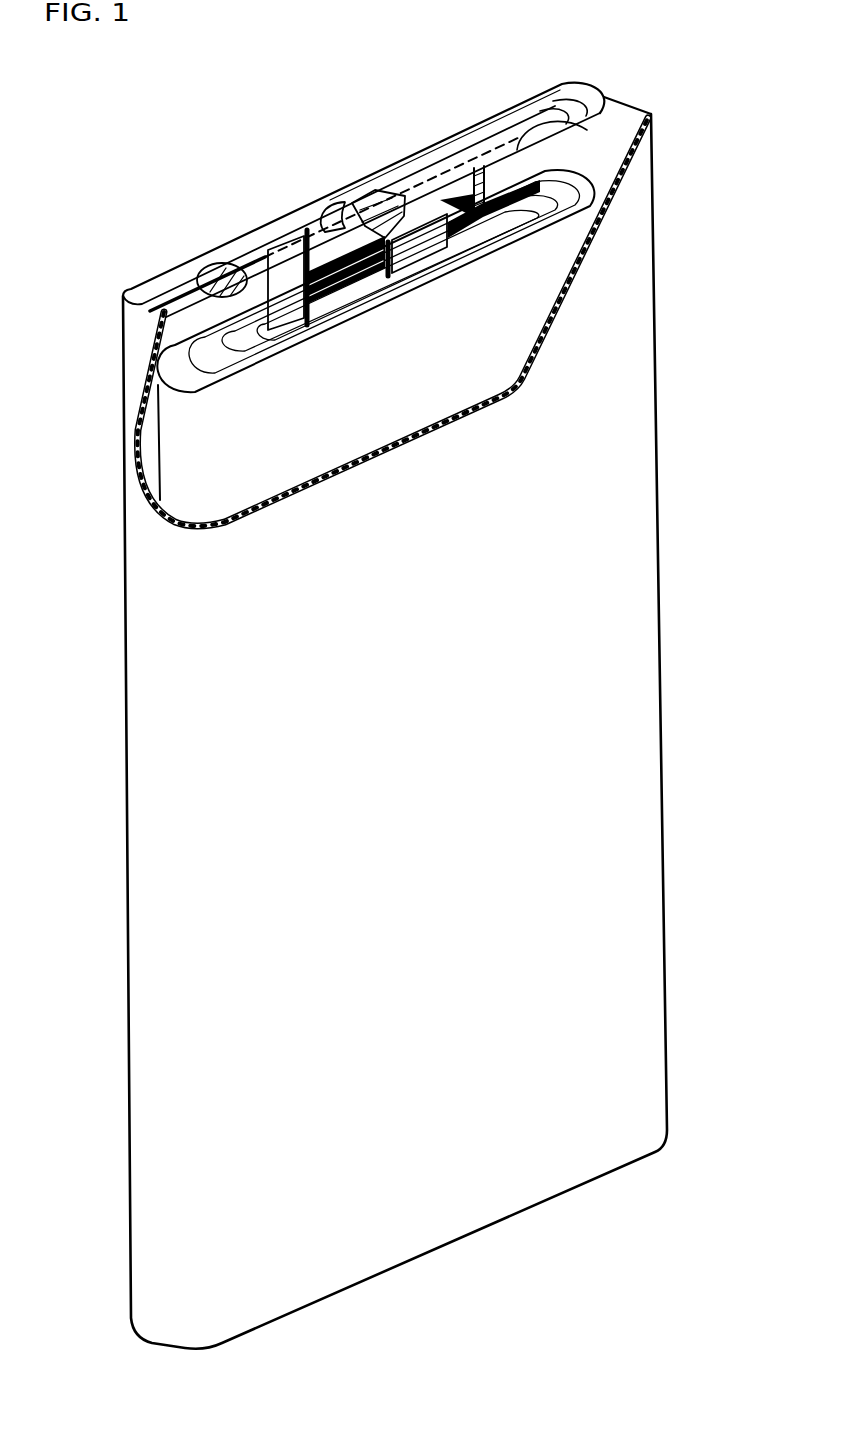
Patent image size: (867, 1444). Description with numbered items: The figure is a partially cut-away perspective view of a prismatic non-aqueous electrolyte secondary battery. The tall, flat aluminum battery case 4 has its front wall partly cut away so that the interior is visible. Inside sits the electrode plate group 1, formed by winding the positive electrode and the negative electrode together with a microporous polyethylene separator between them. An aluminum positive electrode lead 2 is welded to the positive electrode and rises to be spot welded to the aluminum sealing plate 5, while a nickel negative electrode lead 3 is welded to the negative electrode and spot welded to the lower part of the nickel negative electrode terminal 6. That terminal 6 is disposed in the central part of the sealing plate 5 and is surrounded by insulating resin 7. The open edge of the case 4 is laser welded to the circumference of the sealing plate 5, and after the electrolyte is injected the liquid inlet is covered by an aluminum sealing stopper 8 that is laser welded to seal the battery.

The electrode plate group 1 is at (390, 417).
The positive electrode lead 2 is at (285, 310).
The negative electrode lead 3 is at (432, 248).
The battery case 4 is at (620, 943).
The sealing plate 5 is at (455, 167).
The negative electrode terminal 6 is at (386, 193).
The insulating resin 7 is at (330, 206).
The sealing stopper 8 is at (222, 276).